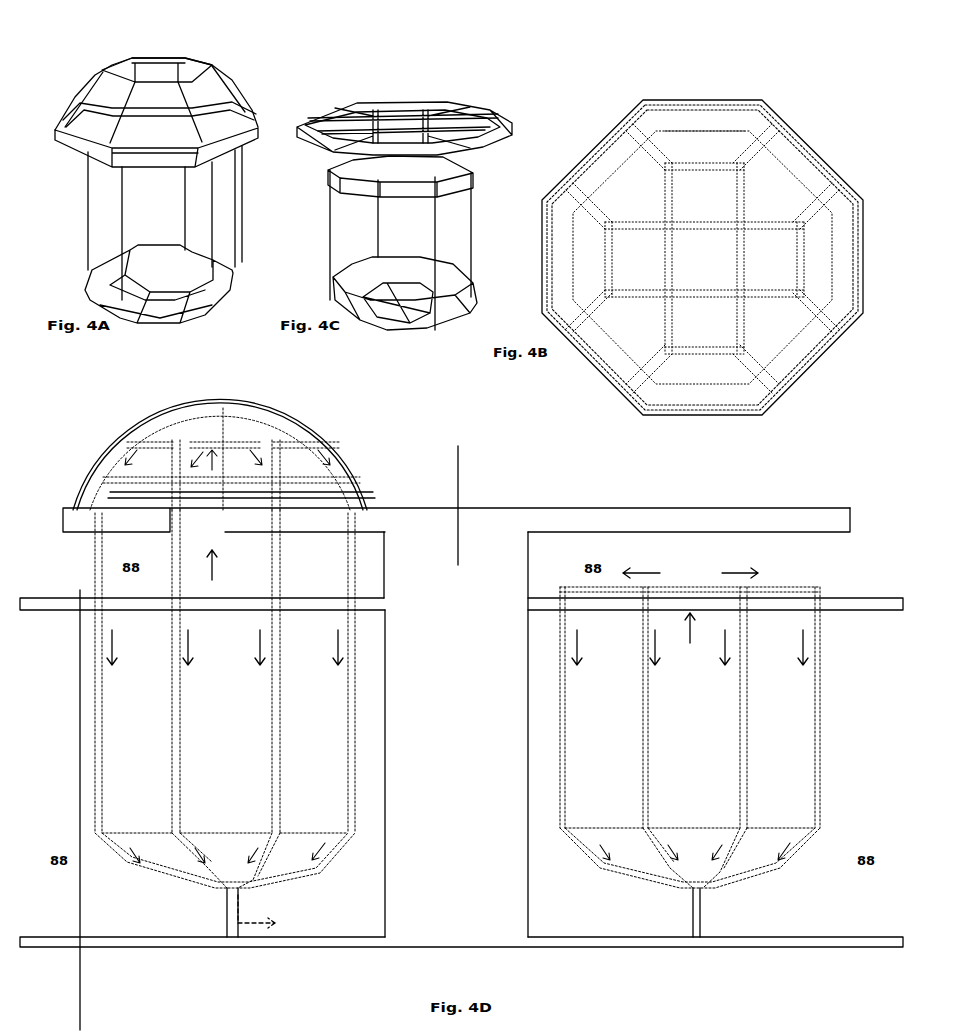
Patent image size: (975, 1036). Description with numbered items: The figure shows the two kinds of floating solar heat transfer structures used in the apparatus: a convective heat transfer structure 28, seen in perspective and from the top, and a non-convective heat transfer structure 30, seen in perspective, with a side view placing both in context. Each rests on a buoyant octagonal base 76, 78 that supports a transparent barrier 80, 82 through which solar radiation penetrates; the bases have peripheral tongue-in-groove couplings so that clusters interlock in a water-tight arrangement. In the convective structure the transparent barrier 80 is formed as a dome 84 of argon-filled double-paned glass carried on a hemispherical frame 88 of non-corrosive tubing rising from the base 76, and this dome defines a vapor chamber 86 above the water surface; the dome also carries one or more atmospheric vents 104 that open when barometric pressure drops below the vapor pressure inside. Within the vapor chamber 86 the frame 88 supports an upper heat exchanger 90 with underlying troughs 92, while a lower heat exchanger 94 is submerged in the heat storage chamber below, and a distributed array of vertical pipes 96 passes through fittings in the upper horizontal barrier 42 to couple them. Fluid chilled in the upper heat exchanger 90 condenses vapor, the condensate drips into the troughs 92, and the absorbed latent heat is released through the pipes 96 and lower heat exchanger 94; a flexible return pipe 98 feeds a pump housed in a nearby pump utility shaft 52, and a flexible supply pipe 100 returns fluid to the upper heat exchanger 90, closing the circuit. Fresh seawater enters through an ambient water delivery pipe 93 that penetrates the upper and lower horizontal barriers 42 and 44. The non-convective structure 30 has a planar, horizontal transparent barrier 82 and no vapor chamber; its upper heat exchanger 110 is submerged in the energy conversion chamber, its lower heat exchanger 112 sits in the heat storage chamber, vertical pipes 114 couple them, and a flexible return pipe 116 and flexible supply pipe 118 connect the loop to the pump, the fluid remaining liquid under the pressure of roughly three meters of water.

In FIG. 4A, the convective heat transfer structure 28 is at (84, 67).
In FIG. 4C, the non-convective heat transfer structure 30 is at (376, 84).
In FIG. 4D, the upper horizontal barrier 42 is at (63, 612).
In FIG. 4D, the lower horizontal barrier 44 is at (93, 943).
In FIG. 4D, the pump utility shaft 52 is at (458, 497).
In FIG. 4A, the buoyant octagonal base 76 is at (66, 145).
In FIG. 4B, the buoyant octagonal base 76 is at (597, 376).
In FIG. 4D, the buoyant octagonal base 76 is at (74, 515).
In FIG. 4C, the buoyant octagonal base 78 is at (315, 153).
In FIG. 4D, the buoyant octagonal base 78 is at (688, 517).
In FIG. 4A, the transparent barrier 80 is at (223, 90).
In FIG. 4B, the transparent barrier 80 is at (610, 148).
In FIG. 4C, the transparent barrier 82 is at (443, 130).
In FIG. 4A, the dome 84 is at (210, 77).
In FIG. 4B, the dome 84 is at (639, 77).
In FIG. 4D, the vapor chamber 86 is at (282, 457).
In FIG. 4B, the hemispherical frame 88 is at (700, 108).
In FIG. 4D, the hemispherical frame 88 is at (223, 408).
In FIG. 4D, the upper heat exchanger 90 is at (317, 488).
In FIG. 4D, the troughs 92 is at (347, 503).
In FIG. 4D, the ambient water delivery pipe 93 is at (82, 1007).
In FIG. 4A, the lower heat exchanger 94 is at (84, 272).
In FIG. 4D, the lower heat exchanger 94 is at (180, 885).
In FIG. 4A, the vertical pipes 96 is at (235, 228).
In FIG. 4D, the vertical pipes 96 is at (348, 707).
In FIG. 4D, the flexible return pipe 98 is at (223, 915).
In FIG. 4D, the flexible supply pipe 100 is at (223, 557).
In FIG. 4B, the atmospheric vents 104 is at (733, 283).
In FIG. 4D, the upper heat exchanger 110 is at (710, 590).
In FIG. 4D, the lower heat exchanger 112 is at (805, 885).
In FIG. 4D, the vertical pipes 114 is at (818, 707).
In FIG. 4D, the flexible return pipe 116 is at (693, 908).
In FIG. 4D, the flexible supply pipe 118 is at (692, 602).